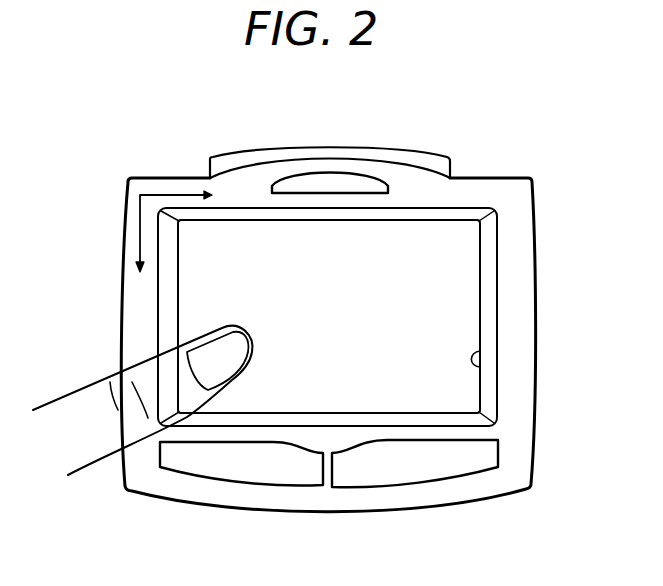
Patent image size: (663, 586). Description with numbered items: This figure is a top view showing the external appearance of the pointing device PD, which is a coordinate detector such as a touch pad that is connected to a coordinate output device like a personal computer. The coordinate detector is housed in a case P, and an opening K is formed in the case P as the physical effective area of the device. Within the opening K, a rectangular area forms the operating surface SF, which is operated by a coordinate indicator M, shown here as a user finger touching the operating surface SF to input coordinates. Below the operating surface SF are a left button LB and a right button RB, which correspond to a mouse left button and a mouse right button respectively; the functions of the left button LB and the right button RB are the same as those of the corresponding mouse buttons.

The coordinate detector PD is at (384, 122).
The case P is at (497, 189).
The operating surface SF is at (460, 272).
The opening K is at (480, 370).
The coordinate indicator M is at (74, 393).
The left button LB is at (253, 473).
The right button RB is at (405, 473).